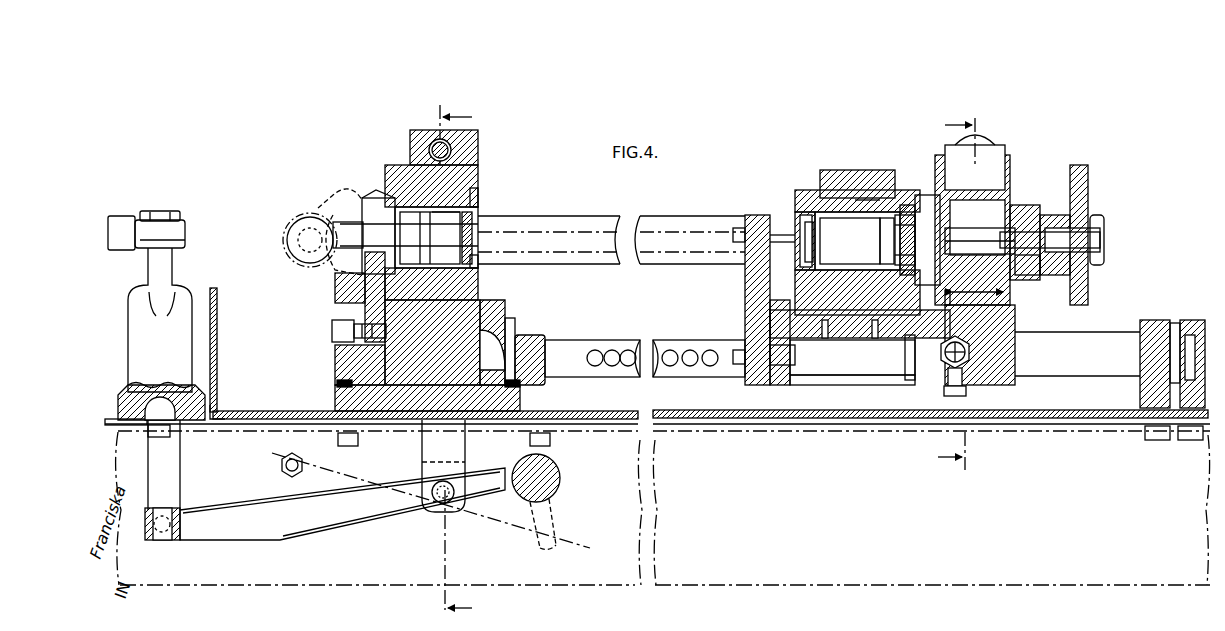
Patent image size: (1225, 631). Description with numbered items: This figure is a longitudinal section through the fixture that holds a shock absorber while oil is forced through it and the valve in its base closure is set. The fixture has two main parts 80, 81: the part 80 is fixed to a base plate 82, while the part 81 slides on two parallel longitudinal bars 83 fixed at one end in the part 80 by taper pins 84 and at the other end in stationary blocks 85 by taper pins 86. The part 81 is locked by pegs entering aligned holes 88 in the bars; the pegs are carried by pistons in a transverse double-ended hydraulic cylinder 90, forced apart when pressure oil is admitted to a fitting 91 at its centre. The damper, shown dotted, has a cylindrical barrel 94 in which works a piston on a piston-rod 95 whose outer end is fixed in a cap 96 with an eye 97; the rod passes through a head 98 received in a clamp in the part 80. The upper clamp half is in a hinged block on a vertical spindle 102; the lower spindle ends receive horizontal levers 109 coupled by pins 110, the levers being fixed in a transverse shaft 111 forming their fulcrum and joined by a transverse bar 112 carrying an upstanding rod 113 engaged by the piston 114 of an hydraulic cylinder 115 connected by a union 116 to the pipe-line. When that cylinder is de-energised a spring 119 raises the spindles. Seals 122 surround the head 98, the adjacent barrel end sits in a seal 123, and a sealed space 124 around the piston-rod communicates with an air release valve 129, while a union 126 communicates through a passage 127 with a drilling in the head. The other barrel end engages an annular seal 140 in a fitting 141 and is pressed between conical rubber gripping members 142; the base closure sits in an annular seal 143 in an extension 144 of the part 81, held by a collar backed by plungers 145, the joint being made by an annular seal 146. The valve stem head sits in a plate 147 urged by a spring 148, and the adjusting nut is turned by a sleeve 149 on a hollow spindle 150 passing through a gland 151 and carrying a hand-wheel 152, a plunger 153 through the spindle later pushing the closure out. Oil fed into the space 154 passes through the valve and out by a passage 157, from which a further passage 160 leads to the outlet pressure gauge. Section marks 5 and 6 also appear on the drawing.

The section line 5- 5 is at (464, 361).
The section line 6- 6 is at (949, 293).
The part 80 is at (488, 392).
The part 81 is at (1000, 385).
The base plate 82 is at (268, 418).
The longitudinal bars 83 is at (610, 343).
The taper pins 84 is at (510, 326).
The stationary blocks 85 is at (1192, 325).
The taper pins 86 is at (1172, 335).
The holes 88 is at (675, 345).
The transverse double-ended hydraulic cylinder 90 is at (1008, 330).
The fitting 91 is at (950, 372).
The cylindrical barrel 94 is at (690, 224).
The piston-rod 95 is at (592, 224).
The cap 96 is at (335, 229).
The eye 97 is at (287, 238).
The head 98 is at (415, 205).
The vertical spindle 102 is at (440, 448).
The levers 109 is at (348, 500).
The pins 110 is at (440, 500).
The transverse shaft 111 is at (553, 490).
The transverse bar 112 is at (180, 522).
The upstanding rod 113 is at (160, 470).
The piston 114 is at (198, 425).
The hydraulic cylinder 115 is at (182, 318).
The union 116 is at (120, 232).
The spring 119 is at (478, 522).
The seals 122 is at (472, 196).
The seal 123 is at (468, 262).
The sealed space 124 is at (440, 220).
The union 126 is at (332, 330).
The passage 127 is at (340, 293).
The air release valve 129 is at (425, 142).
The annular seal 140 is at (800, 212).
The fitting 141 is at (876, 188).
The conical rubber gripping members 142 is at (745, 226).
The annular seal 143 is at (912, 200).
The extension 144 is at (930, 200).
The plungers 145 is at (842, 193).
The annular seal 146 is at (896, 208).
The plate 147 is at (885, 300).
The spring 148 is at (898, 230).
The sleeve 149 is at (975, 213).
The hollow spindle 150 is at (1020, 235).
The gland 151 is at (1028, 263).
The hand-wheel 152 is at (1088, 290).
The plunger 153 is at (1100, 234).
The space 154 is at (835, 222).
The passage 157 is at (1003, 200).
The further passage 160 is at (1010, 295).